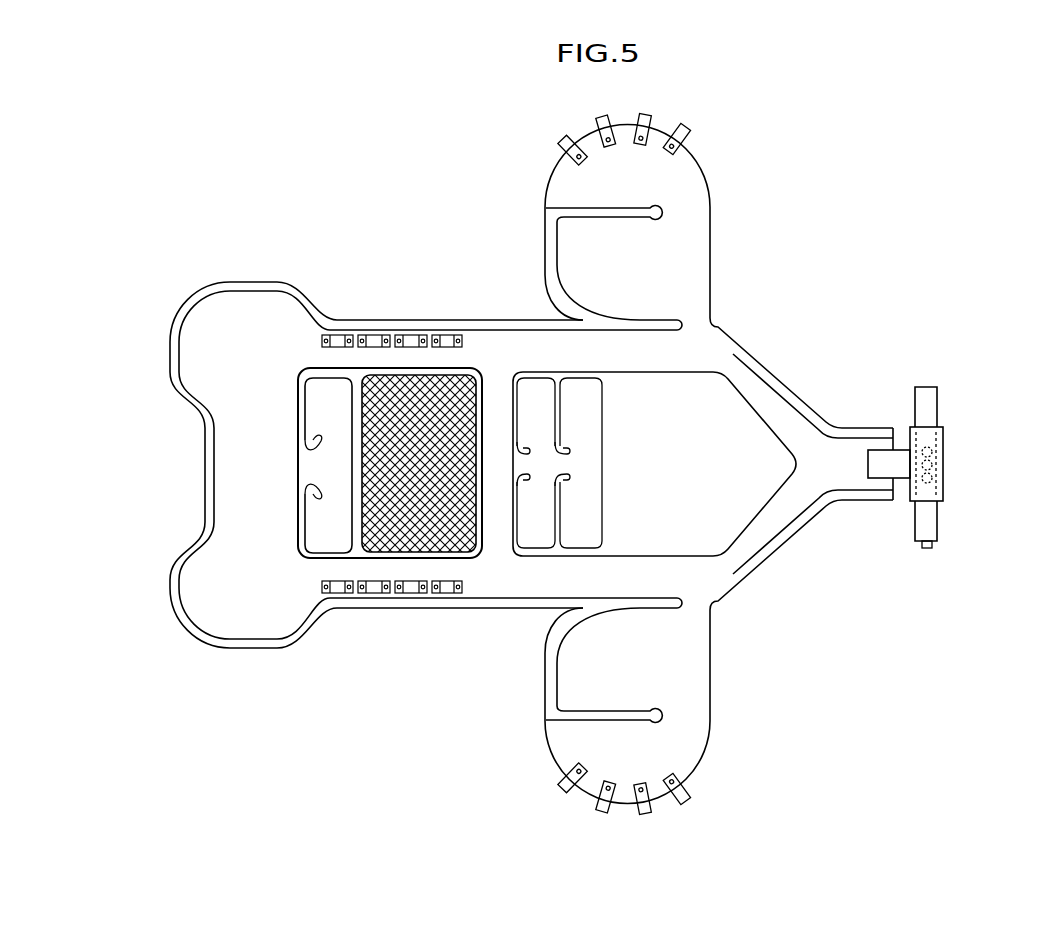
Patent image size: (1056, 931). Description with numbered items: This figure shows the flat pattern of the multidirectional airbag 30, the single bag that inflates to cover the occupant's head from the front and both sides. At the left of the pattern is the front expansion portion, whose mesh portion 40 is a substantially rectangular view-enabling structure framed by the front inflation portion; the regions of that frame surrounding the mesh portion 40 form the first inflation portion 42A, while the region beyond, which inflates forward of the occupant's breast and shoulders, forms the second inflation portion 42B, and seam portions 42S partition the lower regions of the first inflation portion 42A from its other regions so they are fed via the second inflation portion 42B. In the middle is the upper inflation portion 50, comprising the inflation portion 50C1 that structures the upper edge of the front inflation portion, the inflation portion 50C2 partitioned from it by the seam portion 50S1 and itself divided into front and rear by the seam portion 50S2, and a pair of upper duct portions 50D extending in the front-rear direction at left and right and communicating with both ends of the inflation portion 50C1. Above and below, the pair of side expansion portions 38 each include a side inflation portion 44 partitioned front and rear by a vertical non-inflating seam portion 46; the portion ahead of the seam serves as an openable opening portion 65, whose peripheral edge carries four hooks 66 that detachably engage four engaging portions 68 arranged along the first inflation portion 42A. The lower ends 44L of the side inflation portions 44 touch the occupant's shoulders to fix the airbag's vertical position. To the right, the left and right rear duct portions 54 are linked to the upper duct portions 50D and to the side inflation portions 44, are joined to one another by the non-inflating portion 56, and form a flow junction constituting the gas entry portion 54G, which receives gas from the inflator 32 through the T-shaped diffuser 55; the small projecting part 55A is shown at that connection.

The multidirectional airbag 30 is at (300, 172).
The inflator 32 is at (937, 517).
The side expansion portions 38 is at (678, 114).
The mesh portion 40 is at (378, 515).
The first inflation portion 42A is at (388, 360).
The second inflation portion 42B is at (253, 603).
The seam portions 42S is at (297, 507).
The side inflation portion 44 is at (636, 452).
The lower ends of the side inflation portions 44L is at (710, 218).
The seam portion 46 is at (615, 205).
The upper inflation portion 50 is at (535, 300).
The inflation portion 50C1 is at (294, 365).
The inflation portion 50C2 is at (600, 557).
The upper duct portions 50D is at (533, 352).
The seam portion 50S1 is at (515, 413).
The seam portion 50S2 is at (562, 405).
The rear duct portions 54 is at (815, 447).
The gas entry portion 54G is at (887, 500).
The diffuser 55 is at (964, 481).
The projection 55A is at (883, 462).
The non-inflating portion 56 is at (735, 513).
The opening portion 65 is at (682, 178).
The hooks 66 is at (645, 117).
The engaging portions 68 is at (372, 330).